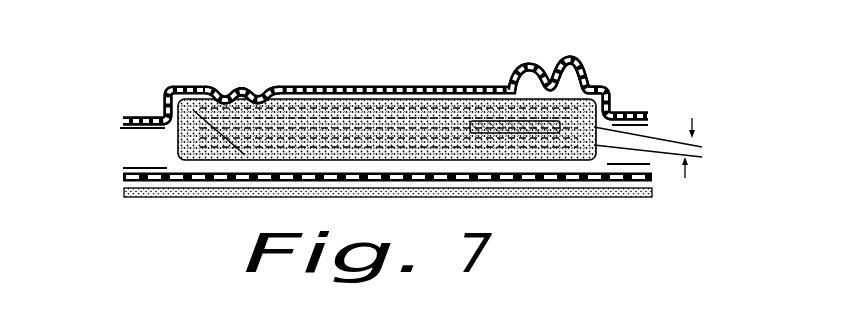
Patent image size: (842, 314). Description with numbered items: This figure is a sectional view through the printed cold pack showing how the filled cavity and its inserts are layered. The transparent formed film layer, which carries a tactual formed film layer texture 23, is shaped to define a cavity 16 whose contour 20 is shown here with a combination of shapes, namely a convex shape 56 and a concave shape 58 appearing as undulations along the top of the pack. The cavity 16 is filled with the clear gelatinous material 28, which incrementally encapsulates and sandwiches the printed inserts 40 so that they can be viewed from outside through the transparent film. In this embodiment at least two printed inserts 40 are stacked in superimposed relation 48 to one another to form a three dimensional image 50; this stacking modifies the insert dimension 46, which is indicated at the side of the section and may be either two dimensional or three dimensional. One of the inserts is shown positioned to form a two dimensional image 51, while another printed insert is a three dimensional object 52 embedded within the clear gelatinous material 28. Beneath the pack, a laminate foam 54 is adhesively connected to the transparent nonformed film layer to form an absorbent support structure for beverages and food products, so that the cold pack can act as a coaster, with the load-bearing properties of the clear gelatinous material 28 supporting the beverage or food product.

The cavity 16 is at (522, 64).
The contour 20 is at (626, 88).
The tactual formed film layer texture 23 is at (363, 82).
The clear gelatinous material 28 is at (165, 113).
The printed insert 40 is at (312, 157).
The insert dimension 46 is at (666, 148).
The superimposed relation 48 is at (189, 102).
The three dimensional image 50 is at (189, 102).
The two dimensional image 51 is at (409, 113).
The three dimensional object 52 is at (493, 123).
The laminate foam 54 is at (165, 200).
The convex shape 56 is at (586, 70).
The concave shape 58 is at (229, 92).